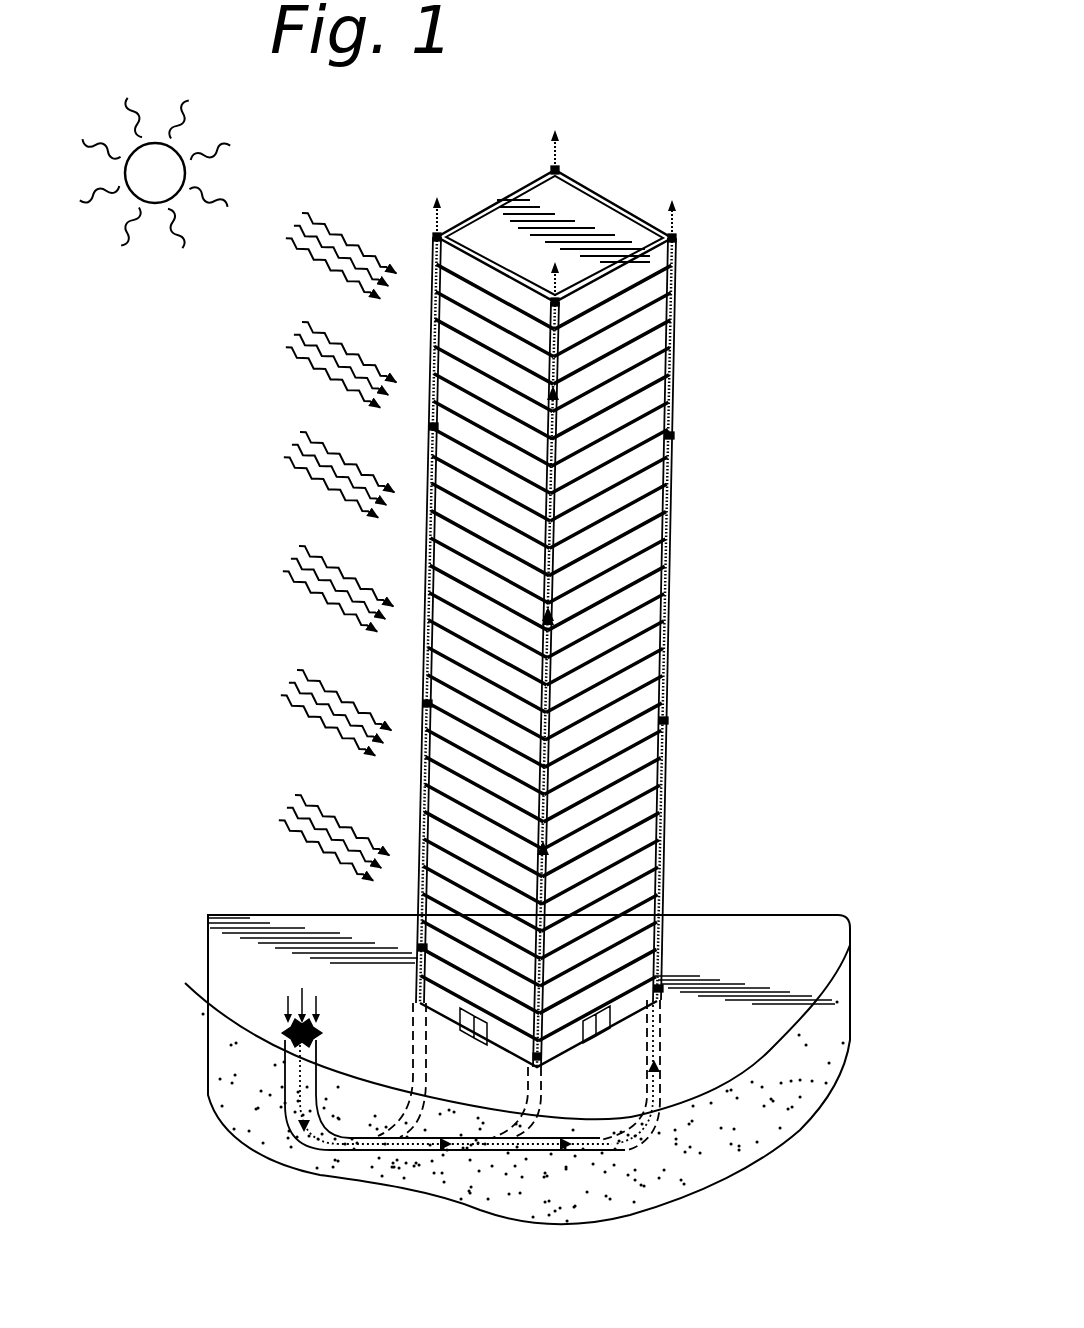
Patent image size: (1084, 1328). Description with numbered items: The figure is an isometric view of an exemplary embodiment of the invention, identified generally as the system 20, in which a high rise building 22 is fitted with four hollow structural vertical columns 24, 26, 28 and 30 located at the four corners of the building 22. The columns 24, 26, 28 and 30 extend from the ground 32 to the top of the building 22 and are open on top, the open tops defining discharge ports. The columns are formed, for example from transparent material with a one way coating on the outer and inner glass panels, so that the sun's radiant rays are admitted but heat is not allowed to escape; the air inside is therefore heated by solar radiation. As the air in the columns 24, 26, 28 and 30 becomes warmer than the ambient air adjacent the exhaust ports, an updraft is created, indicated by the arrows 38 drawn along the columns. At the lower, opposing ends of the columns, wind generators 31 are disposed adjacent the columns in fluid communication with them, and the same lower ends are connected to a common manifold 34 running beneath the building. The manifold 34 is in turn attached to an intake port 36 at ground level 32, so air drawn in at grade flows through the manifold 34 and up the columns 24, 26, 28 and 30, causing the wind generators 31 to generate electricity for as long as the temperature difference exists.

The exemplary embodiment of the invention 20 is at (747, 721).
The high rise building 22 is at (669, 154).
The hollow structural vertical column 24 is at (436, 248).
The hollow structural vertical column 26 is at (569, 167).
The hollow structural vertical column 28 is at (556, 372).
The hollow structural vertical column 30 is at (676, 433).
The wind generators 31 is at (406, 994).
The ground 32 is at (778, 950).
The common manifold 34 is at (679, 1062).
The intake port 36 is at (285, 1030).
The arrows 38 is at (556, 619).